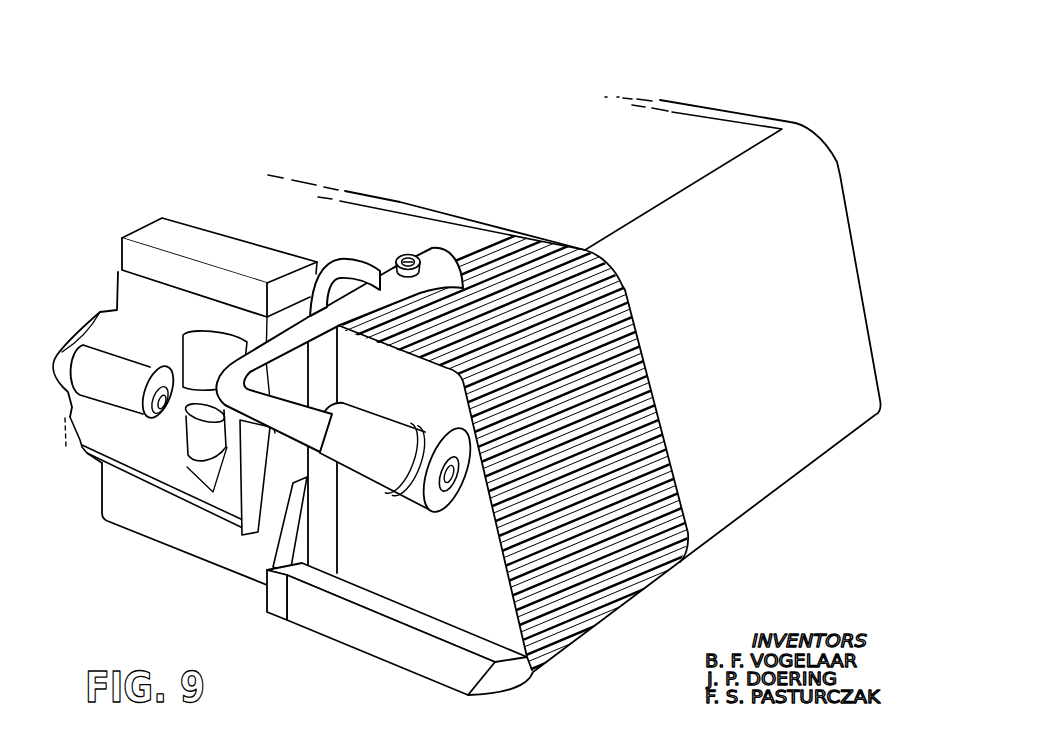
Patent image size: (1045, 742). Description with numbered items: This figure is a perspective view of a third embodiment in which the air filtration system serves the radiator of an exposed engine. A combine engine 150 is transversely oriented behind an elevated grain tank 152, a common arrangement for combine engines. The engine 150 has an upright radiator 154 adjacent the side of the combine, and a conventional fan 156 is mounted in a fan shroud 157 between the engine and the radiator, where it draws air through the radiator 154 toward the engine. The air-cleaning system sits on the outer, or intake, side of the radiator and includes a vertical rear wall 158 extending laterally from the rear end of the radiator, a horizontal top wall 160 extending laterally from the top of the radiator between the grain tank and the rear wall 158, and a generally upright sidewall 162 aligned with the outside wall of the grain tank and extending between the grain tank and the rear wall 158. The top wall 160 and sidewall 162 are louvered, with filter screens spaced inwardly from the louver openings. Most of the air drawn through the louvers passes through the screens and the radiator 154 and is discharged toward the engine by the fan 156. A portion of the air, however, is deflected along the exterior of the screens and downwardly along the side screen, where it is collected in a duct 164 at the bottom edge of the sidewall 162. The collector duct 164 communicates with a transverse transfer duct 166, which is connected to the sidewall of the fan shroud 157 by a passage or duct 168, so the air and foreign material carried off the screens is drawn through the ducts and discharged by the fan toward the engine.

The combine engine 150 is at (147, 517).
The grain tank 152 is at (748, 274).
The radiator 154 is at (330, 347).
The fan 156 is at (255, 368).
The fan shroud 157 is at (297, 393).
The vertical rear wall 158 is at (425, 555).
The horizontal top wall 160 is at (463, 288).
The sidewall 162 is at (640, 397).
The collector duct 164 is at (642, 577).
The transverse transfer duct 166 is at (388, 650).
The passage or duct 168 is at (293, 547).